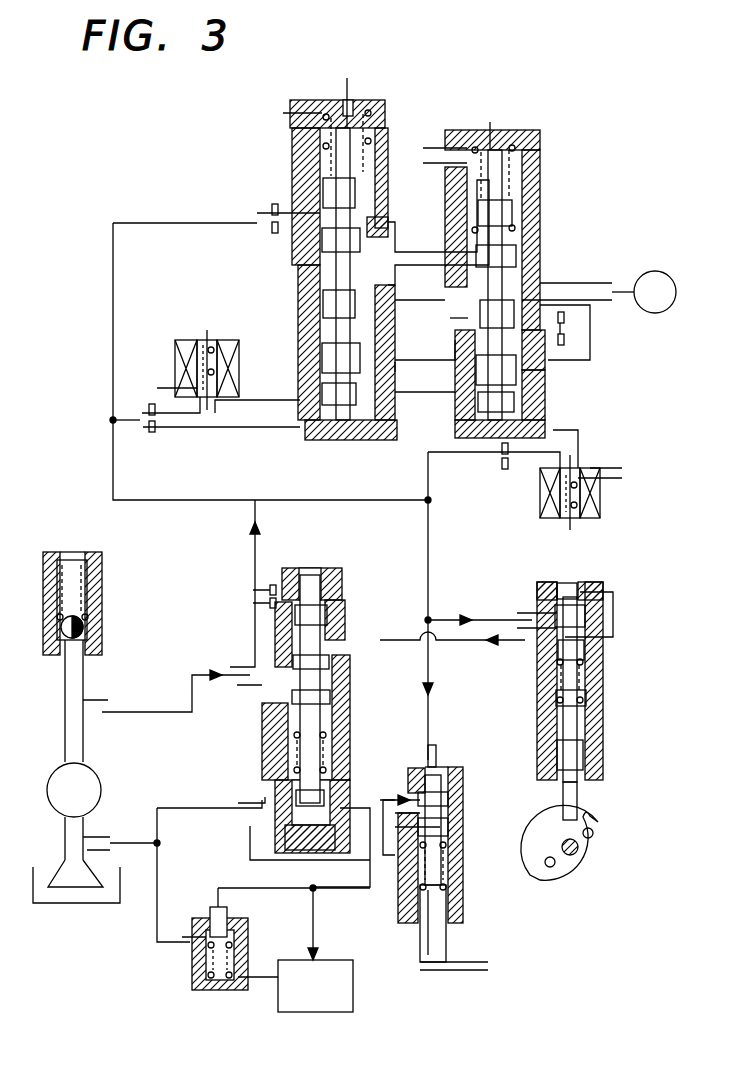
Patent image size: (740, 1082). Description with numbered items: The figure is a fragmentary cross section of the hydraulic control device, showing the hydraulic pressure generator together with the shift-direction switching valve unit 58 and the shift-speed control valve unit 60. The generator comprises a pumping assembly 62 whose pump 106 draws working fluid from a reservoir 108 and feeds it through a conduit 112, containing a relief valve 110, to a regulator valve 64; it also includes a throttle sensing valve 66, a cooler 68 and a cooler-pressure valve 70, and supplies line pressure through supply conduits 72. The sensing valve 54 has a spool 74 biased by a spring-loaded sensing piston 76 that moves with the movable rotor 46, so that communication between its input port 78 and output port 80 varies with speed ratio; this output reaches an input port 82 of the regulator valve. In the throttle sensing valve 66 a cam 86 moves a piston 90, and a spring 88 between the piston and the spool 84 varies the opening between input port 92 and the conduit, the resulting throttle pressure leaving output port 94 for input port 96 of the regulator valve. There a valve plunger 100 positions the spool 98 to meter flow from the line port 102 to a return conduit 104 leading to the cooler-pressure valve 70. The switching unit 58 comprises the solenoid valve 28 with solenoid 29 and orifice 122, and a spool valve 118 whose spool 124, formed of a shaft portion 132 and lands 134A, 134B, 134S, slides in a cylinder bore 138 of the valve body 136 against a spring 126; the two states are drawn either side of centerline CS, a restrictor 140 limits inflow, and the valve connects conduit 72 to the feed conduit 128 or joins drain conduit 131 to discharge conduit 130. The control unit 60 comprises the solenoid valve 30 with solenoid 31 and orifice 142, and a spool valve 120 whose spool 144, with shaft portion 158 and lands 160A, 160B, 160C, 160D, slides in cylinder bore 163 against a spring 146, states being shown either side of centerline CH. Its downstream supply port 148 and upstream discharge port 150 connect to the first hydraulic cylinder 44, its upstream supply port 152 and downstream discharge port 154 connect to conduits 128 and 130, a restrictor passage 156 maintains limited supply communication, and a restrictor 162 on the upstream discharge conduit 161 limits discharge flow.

The solenoid valve 28 is at (172, 350).
The solenoid 29 is at (192, 340).
The solenoid valve 30 is at (606, 490).
The solenoid 31 is at (556, 522).
The first hydraulic cylinder 44 is at (652, 270).
The movable rotor 46 is at (465, 970).
The sensing valve 54 is at (466, 876).
The shift-direction switching valve unit 58 is at (188, 160).
The shift-speed control valve unit 60 is at (596, 167).
The pumping assembly 62 is at (70, 548).
The regulator valve 64 is at (348, 602).
The throttle sensing valve 66 is at (608, 652).
The cooler 68 is at (334, 960).
The cooler-pressure valve 70 is at (198, 958).
The supply conduit 72 is at (430, 548).
The spool 74 is at (440, 828).
The sensing piston 76 is at (420, 948).
The input port 78 is at (438, 766).
The output port 80 is at (422, 760).
The input port 82 is at (398, 800).
The spool 84 is at (566, 586).
The cam 86 is at (578, 876).
The spring 88 is at (596, 672).
The piston 90 is at (582, 800).
The input port 92 is at (535, 620).
The output port 94 is at (530, 640).
The input port 96 is at (268, 828).
The spool 98 is at (300, 578).
The valve plunger 100 is at (288, 803).
The line port 102 is at (248, 668).
The return conduit 104 is at (190, 806).
The pump 106 is at (97, 786).
The reservoir 108 is at (90, 905).
The relief valve 110 is at (85, 635).
The conduit 112 is at (98, 705).
The spool valve 118 is at (370, 443).
The spool valve 120 is at (466, 128).
The orifice 122 is at (154, 436).
The spool 124 is at (340, 104).
The spring 126 is at (300, 115).
The feed conduit 128 is at (416, 254).
The discharge conduit 130 is at (425, 352).
The drain conduit 131 is at (318, 322).
The shaft portion 132 is at (316, 352).
The spool land 134A is at (318, 378).
The spool land 134B is at (310, 236).
The spool land 134S is at (312, 305).
The valve body 136 is at (300, 172).
The cylinder bore 138 is at (312, 160).
The restrictor 140 is at (272, 208).
The orifice 142 is at (503, 462).
The spool 144 is at (500, 132).
The spring 146 is at (525, 150).
The downstream supply port 148 is at (545, 296).
The upstream discharge port 150 is at (552, 352).
The upstream supply port 152 is at (420, 290).
The downstream discharge port 154 is at (460, 372).
The restrictor passage 156 is at (542, 268).
The shaft portion 158 is at (465, 408).
The spool land 160A is at (455, 320).
The spool land 160B is at (545, 382).
The spool land 160C is at (550, 412).
The spool land 160D is at (522, 212).
The upstream discharge conduit 161 is at (566, 340).
The restrictor 162 is at (566, 318).
The cylinder bore 163 is at (530, 172).
The centerline CS is at (345, 90).
The centerline CH is at (489, 124).